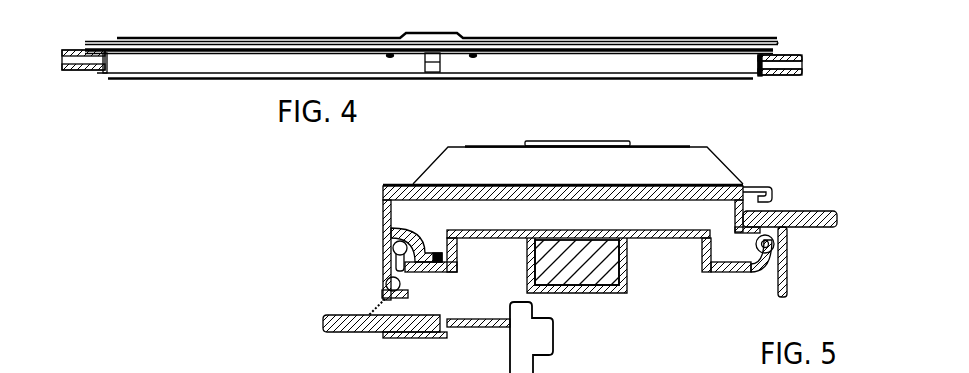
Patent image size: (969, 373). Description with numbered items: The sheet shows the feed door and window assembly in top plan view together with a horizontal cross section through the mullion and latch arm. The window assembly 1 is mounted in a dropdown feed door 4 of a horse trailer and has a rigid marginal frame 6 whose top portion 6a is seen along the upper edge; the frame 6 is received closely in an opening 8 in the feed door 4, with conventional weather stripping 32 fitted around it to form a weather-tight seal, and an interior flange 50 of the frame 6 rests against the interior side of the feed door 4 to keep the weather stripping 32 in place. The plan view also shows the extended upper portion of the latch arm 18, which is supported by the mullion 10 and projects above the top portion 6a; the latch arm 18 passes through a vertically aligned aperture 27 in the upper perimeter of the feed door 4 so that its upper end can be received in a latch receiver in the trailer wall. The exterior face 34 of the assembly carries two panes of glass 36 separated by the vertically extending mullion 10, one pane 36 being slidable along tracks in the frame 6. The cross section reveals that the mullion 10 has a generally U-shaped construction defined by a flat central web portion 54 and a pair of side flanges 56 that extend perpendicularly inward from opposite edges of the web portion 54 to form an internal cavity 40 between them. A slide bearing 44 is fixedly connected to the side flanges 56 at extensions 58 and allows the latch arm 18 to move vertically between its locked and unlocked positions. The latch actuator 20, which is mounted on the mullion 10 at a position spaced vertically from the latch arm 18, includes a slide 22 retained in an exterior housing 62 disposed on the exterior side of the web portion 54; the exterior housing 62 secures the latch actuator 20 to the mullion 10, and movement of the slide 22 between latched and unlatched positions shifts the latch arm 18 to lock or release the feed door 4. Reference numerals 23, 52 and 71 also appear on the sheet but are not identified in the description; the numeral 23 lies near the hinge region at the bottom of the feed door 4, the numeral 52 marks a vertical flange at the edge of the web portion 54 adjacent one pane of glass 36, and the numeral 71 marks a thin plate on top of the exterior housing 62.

In FIG. 4, the window assembly 1 is at (190, 98).
In FIG. 4, the dropdown feed door 4 is at (66, 76).
In FIG. 4, the marginal frame 6 is at (62, 51).
In FIG. 4, the top portion of frame 6a is at (237, 62).
In FIG. 4, the opening 8 is at (777, 73).
In FIG. 5, the mullion 10 is at (760, 190).
In FIG. 4, the latch arm 18 is at (433, 72).
In FIG. 5, the latch arm 18 is at (588, 272).
In FIG. 4, the latch actuator 20 is at (447, 33).
In FIG. 5, the latch actuator 20 is at (720, 158).
In FIG. 4, the slide 22 is at (431, 22).
In FIG. 5, the slide 22 is at (598, 142).
In FIG. 4, the rivet 23 is at (287, 28).
In FIG. 4, the aperture 27 is at (423, 60).
In FIG. 4, the weather stripping 32 is at (80, 50).
In FIG. 4, the exterior face 34 is at (798, 55).
In FIG. 5, the pane of glass 36 is at (803, 210).
In FIG. 5, the internal cavity 40 is at (663, 267).
In FIG. 5, the slide bearing 44 is at (628, 268).
In FIG. 4, the interior flange 50 is at (100, 74).
In FIG. 5, the vertical flange 52 is at (738, 213).
In FIG. 5, the central web portion 54 is at (397, 187).
In FIG. 5, the side flange 56 is at (383, 207).
In FIG. 5, the extension 58 is at (396, 231).
In FIG. 5, the exterior housing 62 is at (443, 148).
In FIG. 5, the label plate 71 is at (567, 142).